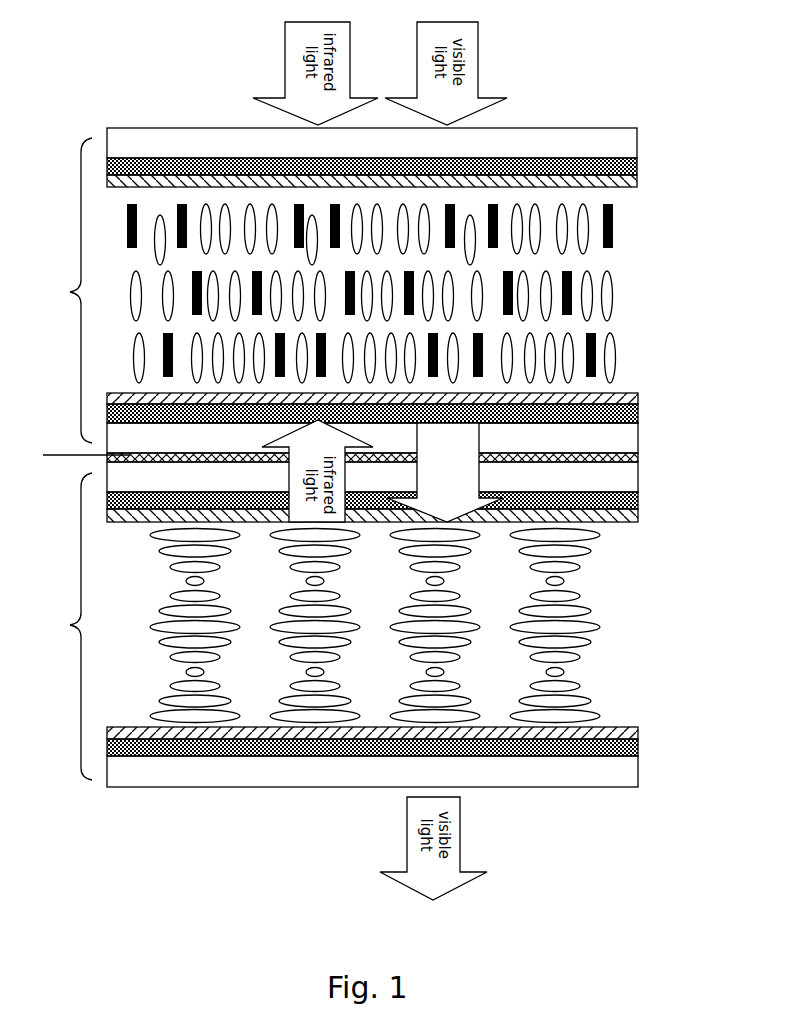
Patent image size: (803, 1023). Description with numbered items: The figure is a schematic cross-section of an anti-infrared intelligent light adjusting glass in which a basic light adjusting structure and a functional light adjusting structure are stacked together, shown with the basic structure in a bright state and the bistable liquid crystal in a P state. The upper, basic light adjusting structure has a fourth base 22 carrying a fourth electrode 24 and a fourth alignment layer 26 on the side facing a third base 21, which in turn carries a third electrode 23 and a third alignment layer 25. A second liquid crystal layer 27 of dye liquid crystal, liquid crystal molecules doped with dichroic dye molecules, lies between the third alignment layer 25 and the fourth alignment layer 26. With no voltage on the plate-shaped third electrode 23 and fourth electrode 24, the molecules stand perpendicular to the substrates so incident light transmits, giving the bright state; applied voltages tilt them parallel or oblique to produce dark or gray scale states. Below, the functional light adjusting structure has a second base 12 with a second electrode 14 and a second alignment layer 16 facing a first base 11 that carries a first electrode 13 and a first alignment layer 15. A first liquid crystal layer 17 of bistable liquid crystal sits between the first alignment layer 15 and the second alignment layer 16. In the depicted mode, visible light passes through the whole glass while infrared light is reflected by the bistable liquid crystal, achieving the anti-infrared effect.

The first base 11 is at (617, 778).
The first electrode 13 is at (622, 745).
The first alignment layer 15 is at (622, 729).
The first liquid crystal layer 17 is at (617, 621).
The second alignment layer 16 is at (620, 518).
The second electrode 14 is at (615, 497).
The second base 12 is at (615, 477).
The third base 21 is at (615, 447).
The third electrode 23 is at (615, 411).
The third alignment layer 25 is at (615, 395).
The second liquid crystal layer 27 is at (616, 285).
The fourth alignment layer 26 is at (625, 182).
The fourth electrode 24 is at (620, 163).
The fourth base 22 is at (617, 141).